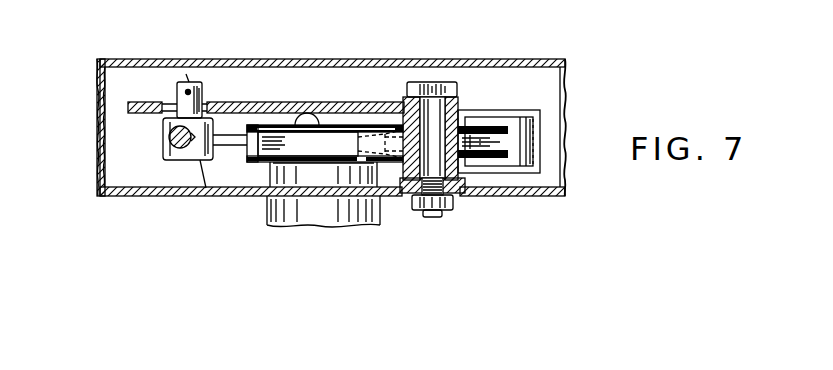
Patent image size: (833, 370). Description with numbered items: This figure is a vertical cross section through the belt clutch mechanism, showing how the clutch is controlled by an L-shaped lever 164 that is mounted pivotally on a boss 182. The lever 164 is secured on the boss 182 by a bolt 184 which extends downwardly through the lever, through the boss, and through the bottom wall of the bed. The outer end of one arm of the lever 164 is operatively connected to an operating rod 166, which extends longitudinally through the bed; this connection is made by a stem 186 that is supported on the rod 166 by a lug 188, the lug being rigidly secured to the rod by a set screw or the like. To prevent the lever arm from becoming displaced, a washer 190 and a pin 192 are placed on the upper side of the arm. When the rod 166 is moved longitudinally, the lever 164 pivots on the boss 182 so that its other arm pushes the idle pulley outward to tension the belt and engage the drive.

The L-shaped lever 164 is at (334, 108).
The operating rod 166 is at (170, 137).
The boss 182 is at (457, 110).
The bolt 184 is at (414, 90).
The stem 186 is at (189, 90).
The lug 188 is at (172, 158).
The washer 190 is at (212, 103).
The pin 192 is at (204, 93).